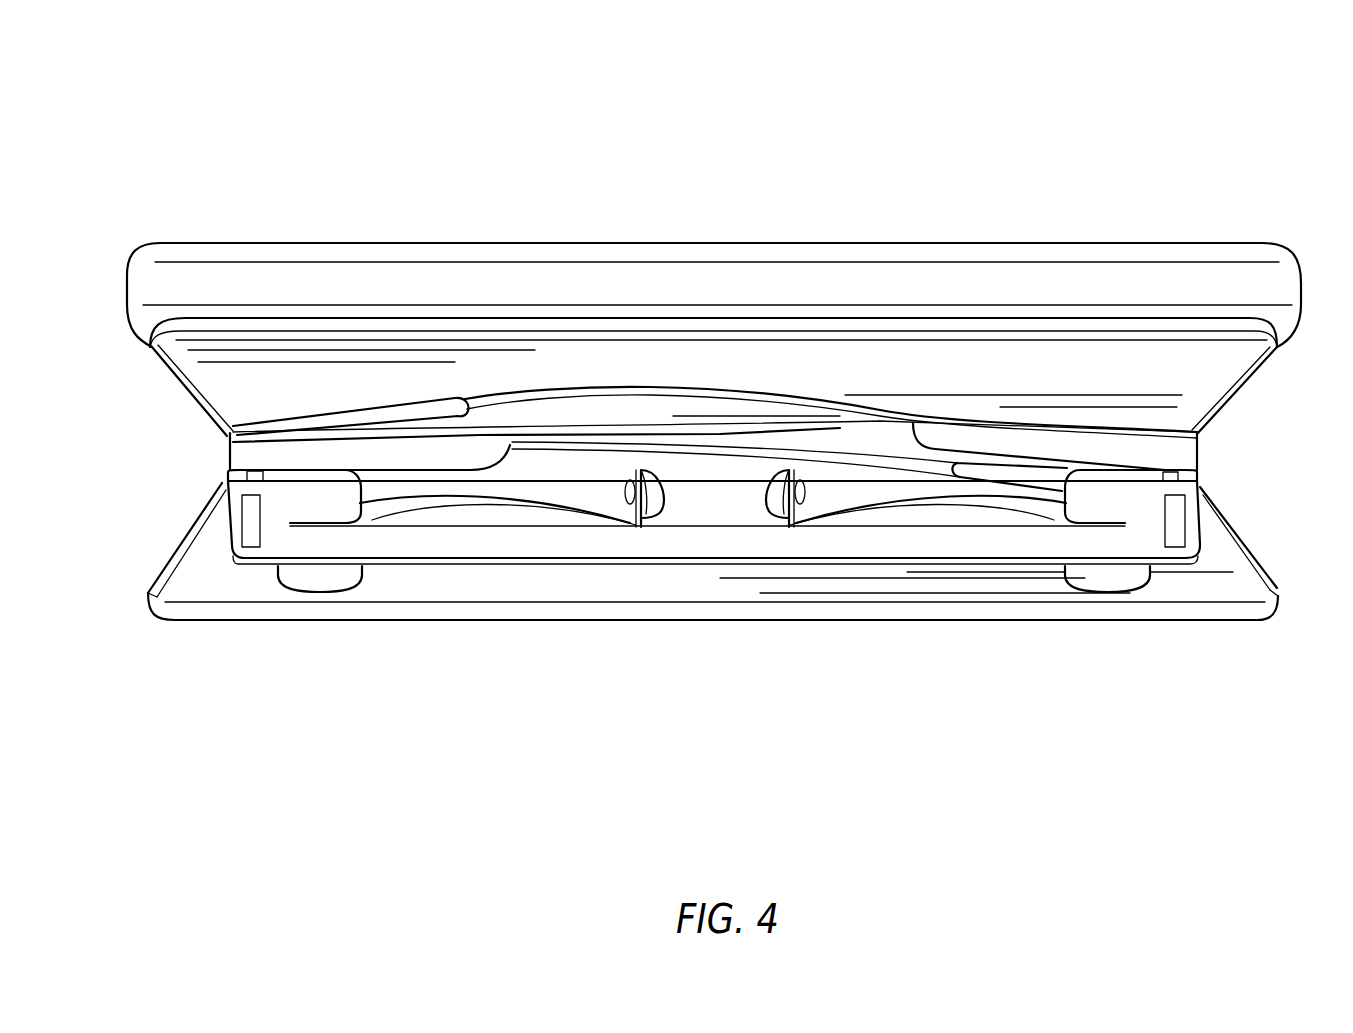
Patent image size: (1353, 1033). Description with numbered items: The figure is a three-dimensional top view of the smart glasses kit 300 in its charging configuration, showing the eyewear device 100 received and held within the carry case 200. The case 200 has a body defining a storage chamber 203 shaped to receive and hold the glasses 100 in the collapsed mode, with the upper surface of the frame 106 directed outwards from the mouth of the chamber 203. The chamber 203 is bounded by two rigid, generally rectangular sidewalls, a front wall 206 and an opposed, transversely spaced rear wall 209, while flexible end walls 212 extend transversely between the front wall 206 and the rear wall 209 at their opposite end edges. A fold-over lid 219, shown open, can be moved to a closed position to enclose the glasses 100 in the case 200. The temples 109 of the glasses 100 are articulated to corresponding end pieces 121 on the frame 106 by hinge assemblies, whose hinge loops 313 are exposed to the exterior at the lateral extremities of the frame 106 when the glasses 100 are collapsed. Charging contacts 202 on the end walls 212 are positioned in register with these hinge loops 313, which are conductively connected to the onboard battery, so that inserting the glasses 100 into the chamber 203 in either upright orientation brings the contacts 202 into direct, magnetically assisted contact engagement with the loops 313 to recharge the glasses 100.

The smart glasses kit 300 is at (1210, 118).
The fold-over lid 219 is at (764, 276).
The eyewear device 100 is at (855, 386).
The rear wall 209 is at (683, 362).
The temples 109 is at (288, 451).
The hinge loops 313 is at (216, 465).
The charging contacts 202 is at (230, 467).
The flexible end walls 212 is at (193, 554).
The end pieces 121 is at (712, 496).
The frame 106 is at (714, 517).
The storage chamber 203 is at (543, 583).
The front wall 206 is at (653, 583).
The carry case 200 is at (1153, 617).